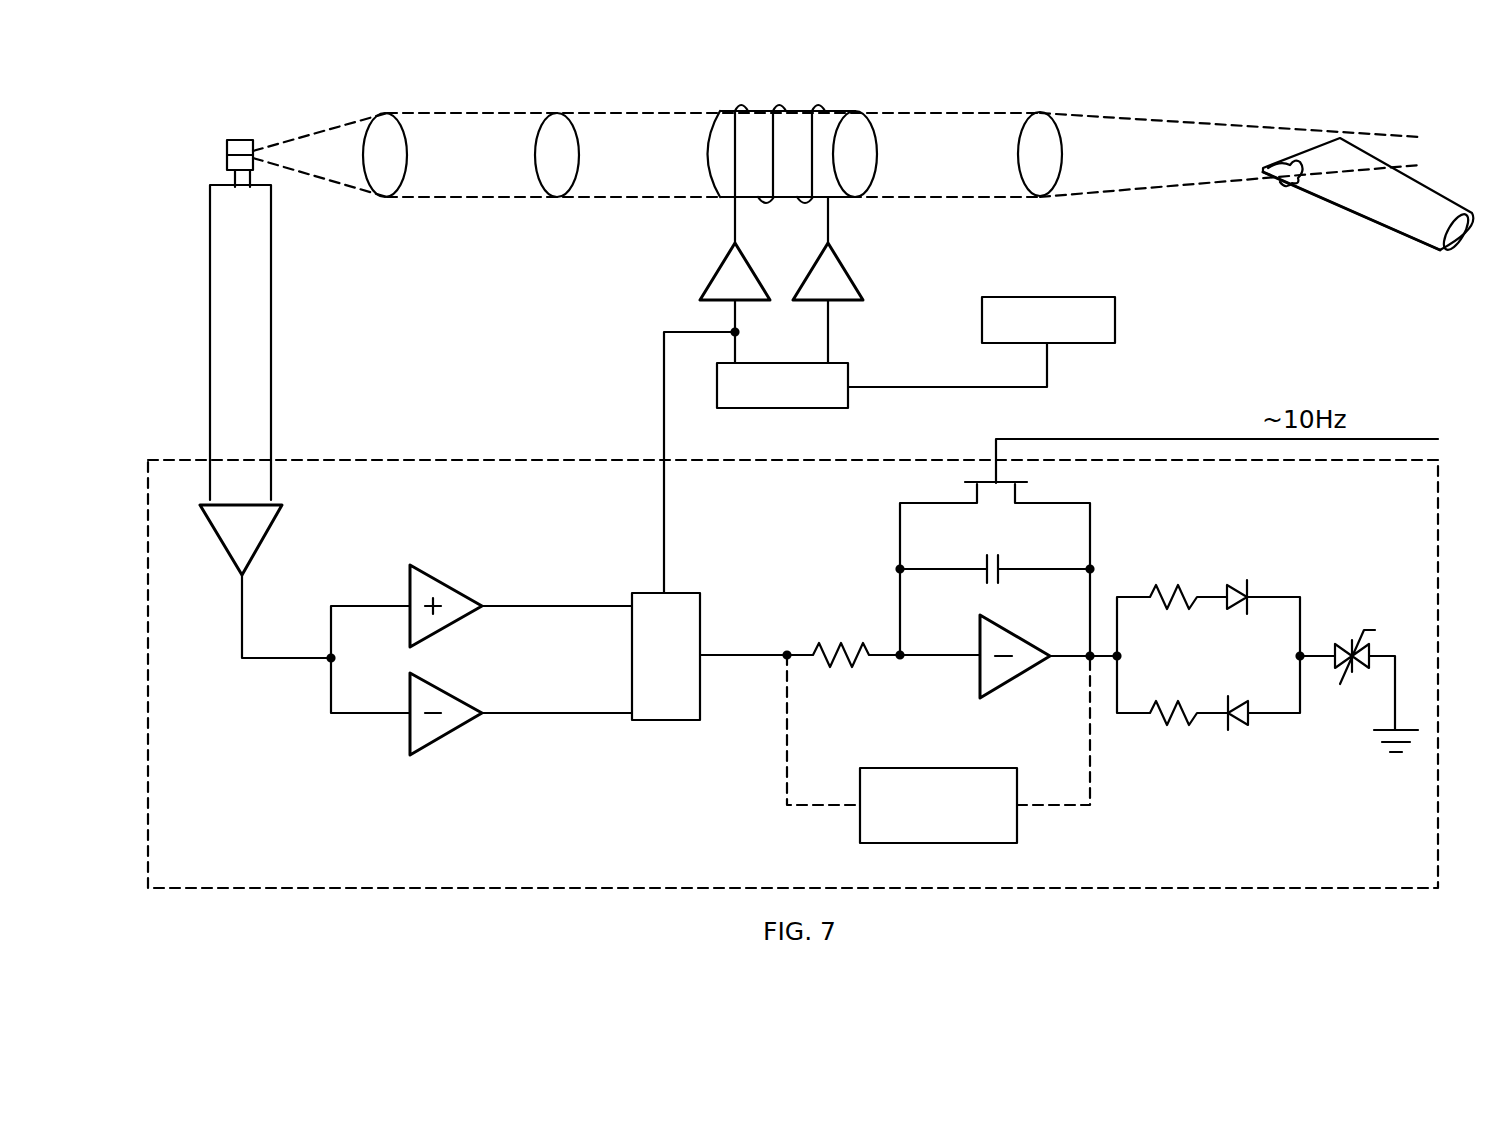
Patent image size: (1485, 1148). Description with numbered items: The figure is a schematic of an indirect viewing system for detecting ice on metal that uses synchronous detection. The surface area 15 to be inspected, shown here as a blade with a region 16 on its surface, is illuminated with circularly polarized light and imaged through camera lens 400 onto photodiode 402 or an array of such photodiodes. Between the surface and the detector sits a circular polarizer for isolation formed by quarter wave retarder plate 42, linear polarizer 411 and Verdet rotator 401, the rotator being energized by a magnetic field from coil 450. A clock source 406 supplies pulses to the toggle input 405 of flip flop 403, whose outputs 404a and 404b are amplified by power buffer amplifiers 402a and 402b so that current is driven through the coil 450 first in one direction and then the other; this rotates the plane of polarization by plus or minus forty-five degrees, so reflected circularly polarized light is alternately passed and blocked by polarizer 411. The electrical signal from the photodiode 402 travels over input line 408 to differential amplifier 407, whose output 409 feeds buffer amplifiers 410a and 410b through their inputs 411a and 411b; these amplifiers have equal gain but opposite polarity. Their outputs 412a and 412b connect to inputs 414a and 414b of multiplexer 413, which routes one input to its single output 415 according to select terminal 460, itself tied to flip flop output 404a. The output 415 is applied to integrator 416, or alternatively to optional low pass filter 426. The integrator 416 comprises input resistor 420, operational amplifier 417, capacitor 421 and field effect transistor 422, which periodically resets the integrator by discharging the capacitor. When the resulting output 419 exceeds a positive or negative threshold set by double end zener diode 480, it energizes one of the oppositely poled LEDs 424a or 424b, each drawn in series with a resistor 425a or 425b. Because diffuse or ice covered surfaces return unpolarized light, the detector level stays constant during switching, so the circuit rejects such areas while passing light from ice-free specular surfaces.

The photodiode 402 is at (238, 140).
The camera lens 400 is at (385, 197).
The linear polarizer 411 is at (556, 197).
The coil 450 is at (780, 110).
The Verdet rotator 401 is at (828, 118).
The quarter wave retarder plate 42 is at (1050, 178).
The defect 16 is at (1272, 165).
The surface area 15 is at (1395, 226).
The power buffer amplifier 402a is at (722, 282).
The power buffer amplifier 402b is at (845, 282).
The flip flop output 404a is at (738, 358).
The flip flop output 404b is at (832, 358).
The flip flop 403 is at (735, 408).
The toggle input 405 is at (895, 390).
The clock source 406 is at (1116, 324).
The input line 408 is at (250, 490).
The differential amplifier 407 is at (280, 515).
The output 409 is at (240, 607).
The input 411a is at (370, 604).
The input 411b is at (370, 716).
The buffer amplifier 410a is at (425, 576).
The buffer amplifier 410b is at (425, 745).
The output 412a is at (490, 608).
The output 412b is at (490, 712).
The multiplexer 413 is at (630, 645).
The multiplexer input 414a is at (618, 602).
The multiplexer input 414b is at (614, 716).
The select terminal 460 is at (665, 562).
The output 415 is at (725, 652).
The input resistor 420 is at (845, 666).
The capacitor 421 is at (980, 563).
The field effect transistor 422 is at (1005, 482).
The output 419 is at (1082, 652).
The operational amplifier 417 is at (992, 690).
The resistor 425a is at (1150, 592).
The LED 424a is at (1235, 590).
The resistor 425b is at (1152, 718).
The LED 424b is at (1243, 724).
The double end zener diode 480 is at (1360, 642).
The low pass filter 426 is at (858, 810).
The integrator 416 is at (1062, 783).